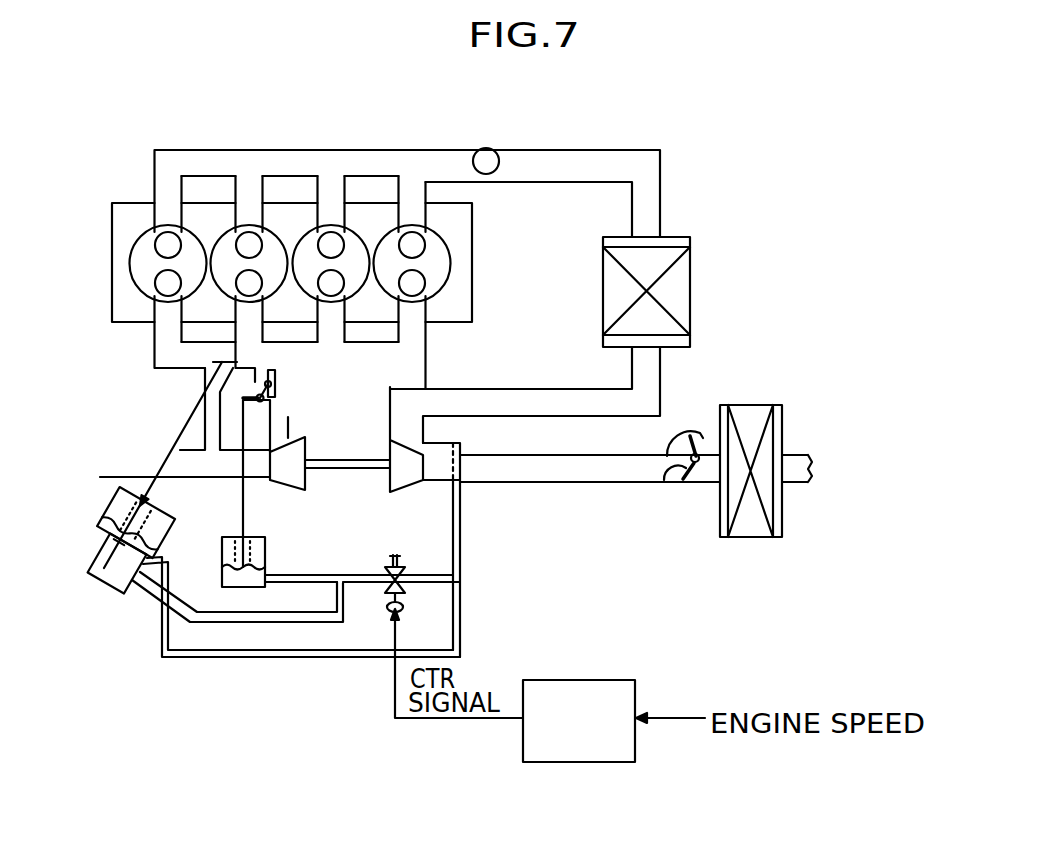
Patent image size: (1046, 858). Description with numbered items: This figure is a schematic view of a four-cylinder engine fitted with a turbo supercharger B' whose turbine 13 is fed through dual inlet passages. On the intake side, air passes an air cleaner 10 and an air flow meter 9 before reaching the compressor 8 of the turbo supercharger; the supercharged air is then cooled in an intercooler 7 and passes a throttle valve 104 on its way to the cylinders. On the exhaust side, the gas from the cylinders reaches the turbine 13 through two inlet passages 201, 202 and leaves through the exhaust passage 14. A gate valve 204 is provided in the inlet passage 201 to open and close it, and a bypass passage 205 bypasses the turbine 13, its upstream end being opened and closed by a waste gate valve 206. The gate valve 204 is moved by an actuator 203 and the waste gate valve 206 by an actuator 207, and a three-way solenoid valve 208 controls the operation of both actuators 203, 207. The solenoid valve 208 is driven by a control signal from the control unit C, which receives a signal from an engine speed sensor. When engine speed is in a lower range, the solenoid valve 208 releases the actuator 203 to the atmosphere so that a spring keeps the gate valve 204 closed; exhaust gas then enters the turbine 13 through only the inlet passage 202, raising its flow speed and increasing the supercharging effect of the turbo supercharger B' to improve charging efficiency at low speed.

The intercooler 7 is at (686, 292).
The compressor 8 is at (409, 483).
The air flow meter 9 is at (672, 477).
The air cleaner 10 is at (755, 405).
The turbine 13 is at (286, 482).
The exhaust passage 14 is at (208, 474).
The throttle valve 104 is at (496, 150).
The inlet passage 201 is at (277, 427).
The inlet passage 202 is at (298, 425).
The actuator 203 is at (266, 546).
The gate valve 204 is at (300, 360).
The bypass passage 205 is at (200, 372).
The waste gate valve 206 is at (218, 356).
The actuator 207 is at (103, 517).
The three-way solenoid valve 208 is at (398, 566).
The turbo supercharger B' is at (359, 498).
The control unit C is at (585, 680).